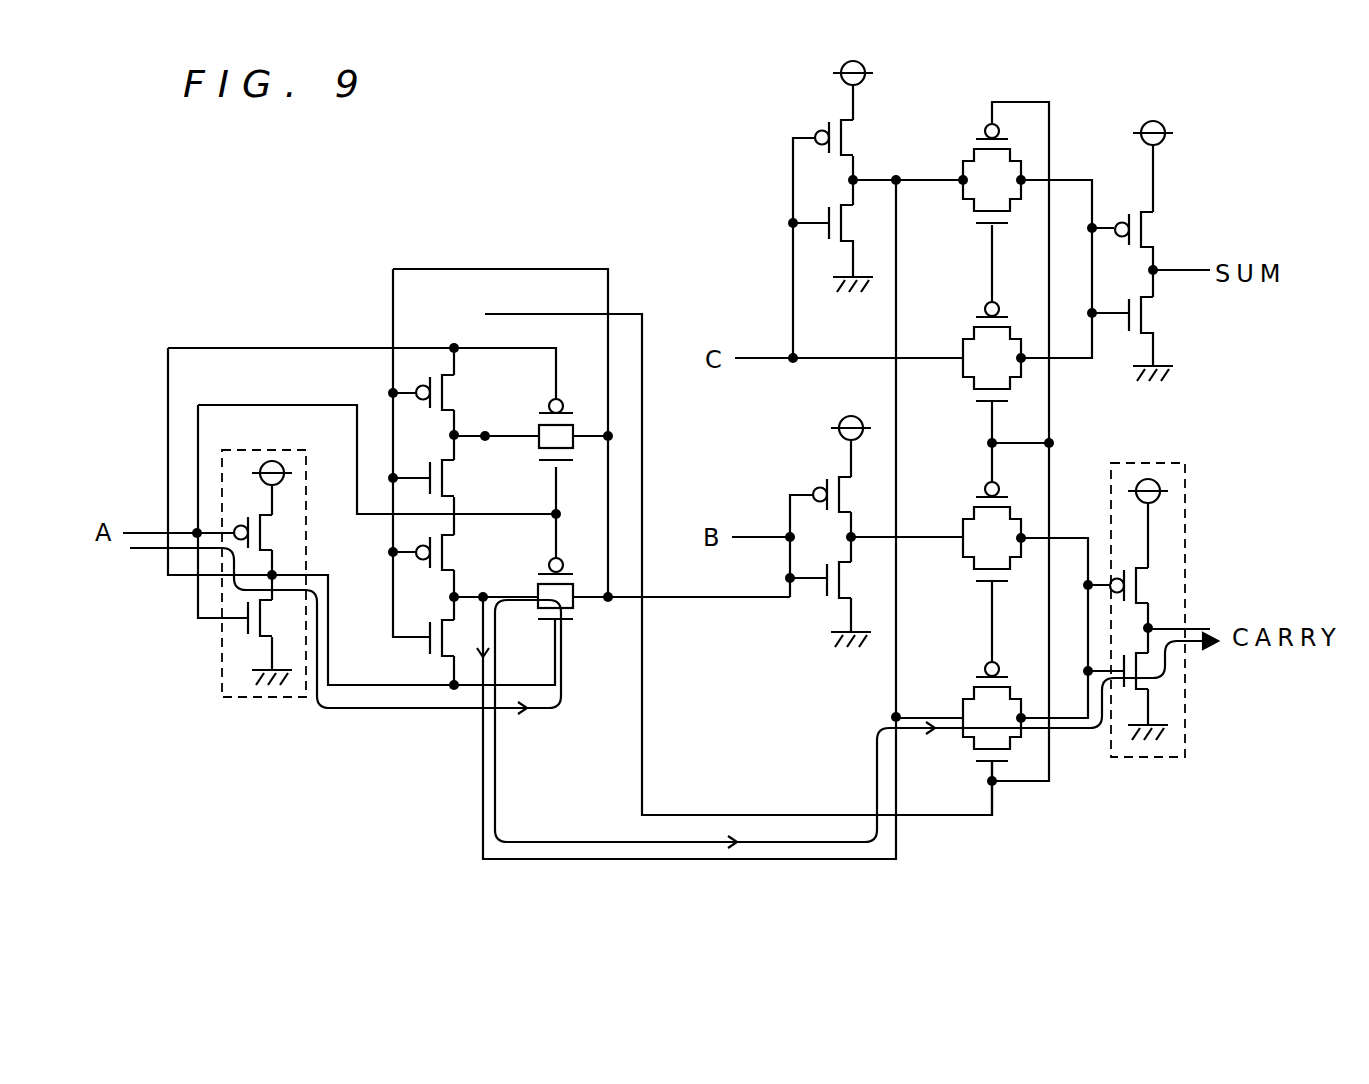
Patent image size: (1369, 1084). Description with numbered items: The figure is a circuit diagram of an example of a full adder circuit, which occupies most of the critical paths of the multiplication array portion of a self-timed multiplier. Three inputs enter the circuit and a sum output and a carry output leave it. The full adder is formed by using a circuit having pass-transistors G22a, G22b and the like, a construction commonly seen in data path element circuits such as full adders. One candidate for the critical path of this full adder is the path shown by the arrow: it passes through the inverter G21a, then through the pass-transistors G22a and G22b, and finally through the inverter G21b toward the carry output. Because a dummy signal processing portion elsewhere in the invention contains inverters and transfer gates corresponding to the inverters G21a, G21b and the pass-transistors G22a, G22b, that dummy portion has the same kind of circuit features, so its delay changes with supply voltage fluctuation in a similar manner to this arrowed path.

The inverter G21a is at (263, 699).
The pass-transistor G22a is at (563, 603).
The pass-transistor G22b is at (987, 740).
The inverter G21b is at (1145, 758).